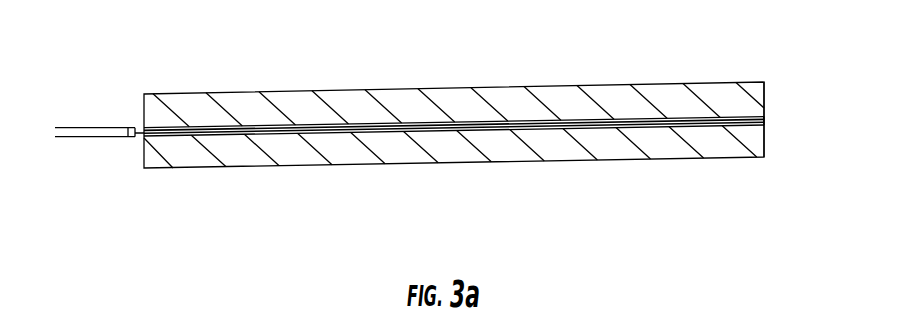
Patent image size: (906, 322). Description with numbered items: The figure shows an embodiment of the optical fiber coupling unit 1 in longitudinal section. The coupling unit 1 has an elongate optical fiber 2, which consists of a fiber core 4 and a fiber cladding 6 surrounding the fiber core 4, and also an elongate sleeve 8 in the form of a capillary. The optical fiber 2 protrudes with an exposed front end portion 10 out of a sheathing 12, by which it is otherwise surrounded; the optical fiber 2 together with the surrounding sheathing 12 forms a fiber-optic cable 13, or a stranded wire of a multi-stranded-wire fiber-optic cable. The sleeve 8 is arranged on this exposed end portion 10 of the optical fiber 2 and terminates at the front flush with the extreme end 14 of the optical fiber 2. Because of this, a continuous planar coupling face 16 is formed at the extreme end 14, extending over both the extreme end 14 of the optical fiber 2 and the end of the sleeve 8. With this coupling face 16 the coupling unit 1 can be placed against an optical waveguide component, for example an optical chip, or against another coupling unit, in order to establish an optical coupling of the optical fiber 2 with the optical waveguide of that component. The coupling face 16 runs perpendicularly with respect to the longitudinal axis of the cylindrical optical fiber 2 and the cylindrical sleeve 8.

The optical fiber coupling unit 1 is at (583, 178).
The optical fiber 2 is at (482, 127).
The fiber core 4 is at (370, 134).
The fiber cladding 6 is at (423, 132).
The sleeve 8 is at (553, 100).
The exposed front end portion 10 is at (548, 128).
The sheathing 12 is at (90, 127).
The fiber-optic cable 13 is at (125, 139).
The extreme end 14 is at (764, 120).
The coupling face 16 is at (764, 95).